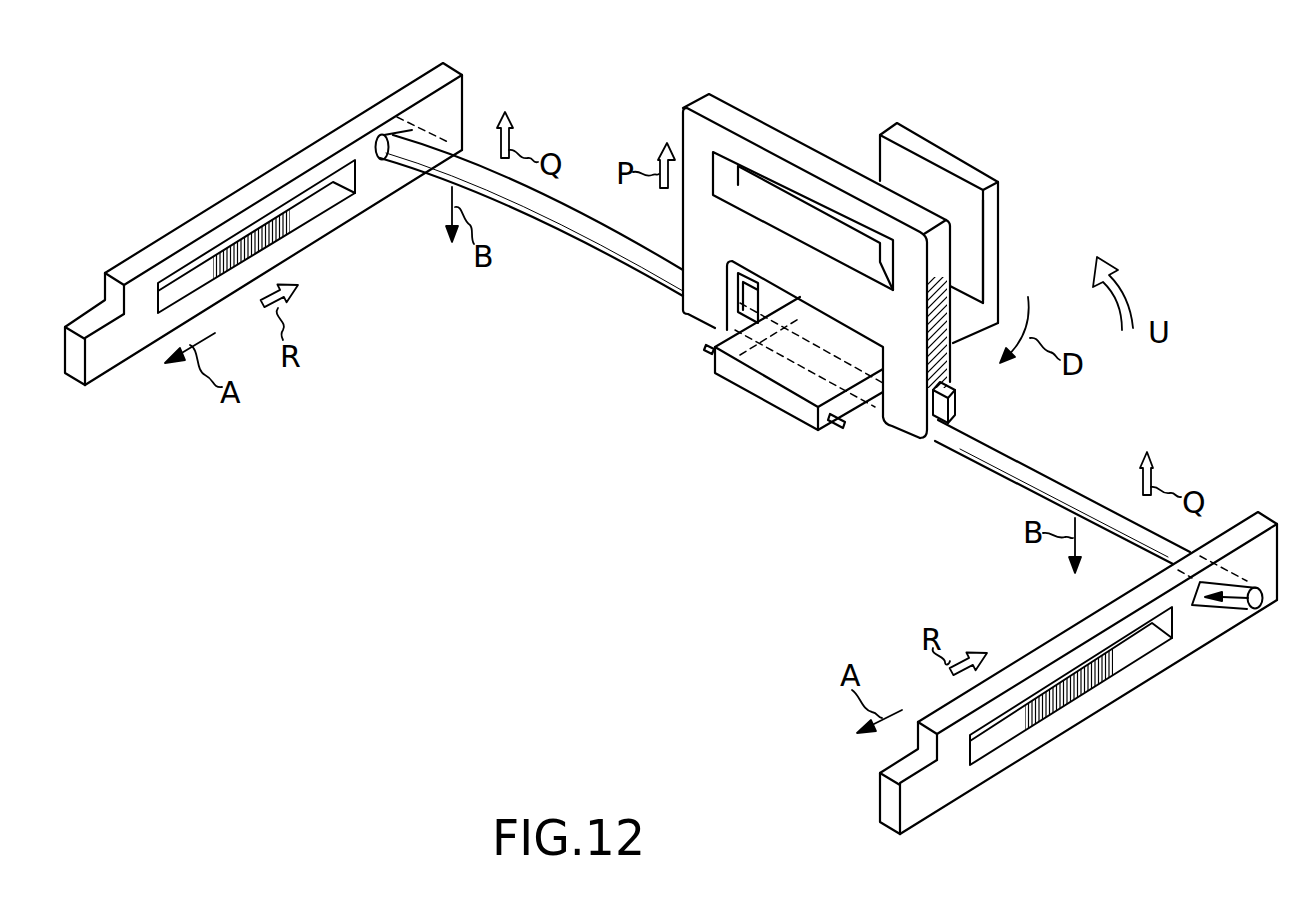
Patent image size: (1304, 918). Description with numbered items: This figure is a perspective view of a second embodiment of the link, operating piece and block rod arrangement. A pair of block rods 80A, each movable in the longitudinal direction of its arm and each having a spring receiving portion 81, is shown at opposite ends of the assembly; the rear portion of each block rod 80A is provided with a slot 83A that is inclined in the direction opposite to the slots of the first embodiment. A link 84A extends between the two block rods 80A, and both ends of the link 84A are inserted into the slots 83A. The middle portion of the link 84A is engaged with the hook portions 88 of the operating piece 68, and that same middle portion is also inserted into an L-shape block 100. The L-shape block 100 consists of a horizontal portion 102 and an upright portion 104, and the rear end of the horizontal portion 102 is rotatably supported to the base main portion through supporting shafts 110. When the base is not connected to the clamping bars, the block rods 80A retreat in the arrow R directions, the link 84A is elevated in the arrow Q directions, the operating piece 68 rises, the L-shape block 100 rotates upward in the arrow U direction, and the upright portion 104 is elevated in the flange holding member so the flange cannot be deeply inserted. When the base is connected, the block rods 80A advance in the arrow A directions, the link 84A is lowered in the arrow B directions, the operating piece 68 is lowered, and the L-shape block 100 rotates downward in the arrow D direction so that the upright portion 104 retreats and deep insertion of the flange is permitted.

The operating piece 68 is at (732, 108).
The block rod 80A is at (313, 225).
The spring receiving portion 81 is at (333, 197).
The slot 83A is at (383, 160).
The link 84A is at (618, 253).
The hook portion 88 is at (962, 410).
The L-shape block 100 is at (1002, 194).
The horizontal portion 102 is at (963, 345).
The upright portion 104 is at (995, 233).
The supporting shaft 110 is at (712, 348).